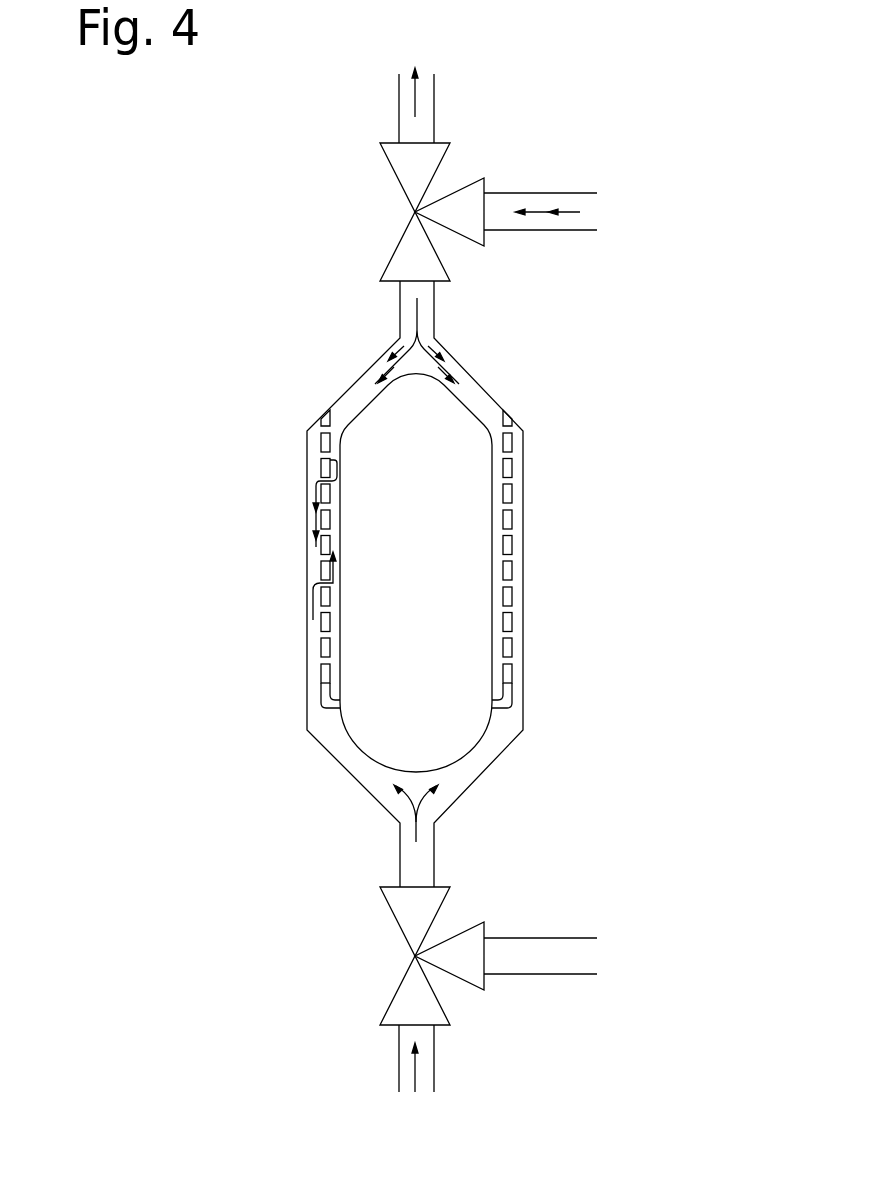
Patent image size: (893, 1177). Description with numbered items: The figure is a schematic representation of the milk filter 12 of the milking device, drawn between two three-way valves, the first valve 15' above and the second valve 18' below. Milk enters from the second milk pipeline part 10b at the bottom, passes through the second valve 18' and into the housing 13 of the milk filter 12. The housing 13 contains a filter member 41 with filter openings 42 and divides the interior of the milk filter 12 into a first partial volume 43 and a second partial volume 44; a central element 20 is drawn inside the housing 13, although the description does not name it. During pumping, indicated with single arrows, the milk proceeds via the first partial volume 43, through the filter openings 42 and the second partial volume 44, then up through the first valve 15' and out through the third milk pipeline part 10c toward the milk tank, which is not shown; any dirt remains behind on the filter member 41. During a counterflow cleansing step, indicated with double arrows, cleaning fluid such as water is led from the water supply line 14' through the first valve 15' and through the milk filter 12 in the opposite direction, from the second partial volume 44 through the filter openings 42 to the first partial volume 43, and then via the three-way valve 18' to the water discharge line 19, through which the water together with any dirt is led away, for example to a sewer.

The second milk pipeline part 10b is at (428, 1063).
The third milk pipeline part 10c is at (408, 113).
The milk filter 12 is at (485, 584).
The housing 13 is at (520, 448).
The water supply line 14' is at (555, 232).
The first valve 15' is at (407, 212).
The second valve 18' is at (411, 956).
The water discharge line 19 is at (551, 962).
The displacement body 20 is at (455, 403).
The filter member 41 is at (328, 410).
The filter openings 42 is at (327, 560).
The first partial volume 43 is at (313, 575).
The second partial volume 44 is at (365, 388).